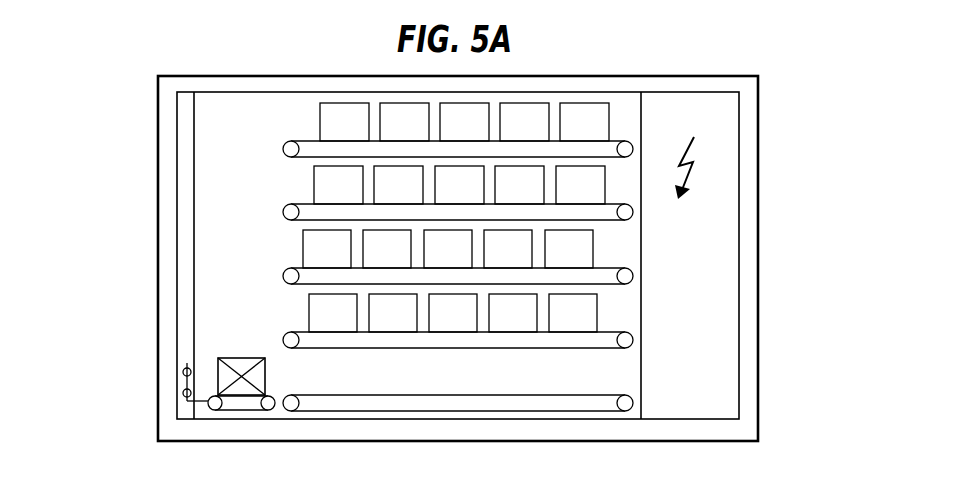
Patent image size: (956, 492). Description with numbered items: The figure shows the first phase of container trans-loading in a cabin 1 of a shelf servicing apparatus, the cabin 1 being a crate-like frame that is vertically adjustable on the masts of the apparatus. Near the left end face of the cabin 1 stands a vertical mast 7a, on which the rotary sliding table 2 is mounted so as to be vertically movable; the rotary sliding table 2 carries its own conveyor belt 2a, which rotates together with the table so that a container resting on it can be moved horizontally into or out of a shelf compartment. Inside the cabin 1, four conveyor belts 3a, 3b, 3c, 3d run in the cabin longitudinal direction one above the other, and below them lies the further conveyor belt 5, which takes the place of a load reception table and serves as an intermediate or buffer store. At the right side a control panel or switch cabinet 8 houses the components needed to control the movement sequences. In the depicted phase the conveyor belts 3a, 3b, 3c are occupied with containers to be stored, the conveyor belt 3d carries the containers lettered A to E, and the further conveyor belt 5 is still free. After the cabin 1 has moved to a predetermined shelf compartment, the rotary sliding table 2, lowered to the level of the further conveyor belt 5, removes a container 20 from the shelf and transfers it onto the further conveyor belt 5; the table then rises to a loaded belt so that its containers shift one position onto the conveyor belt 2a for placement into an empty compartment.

The cabin 1 is at (113, 261).
The vertical mast 7a is at (185, 158).
The conveyor belt 3a is at (610, 146).
The conveyor belt 3b is at (283, 213).
The conveyor belt 3c is at (283, 278).
The conveyor belt 3d is at (633, 338).
The further conveyor belt 5 is at (373, 403).
The control panel or switch cabinet 8 is at (692, 289).
The container to be removed from store 20 is at (218, 358).
The rotary sliding table 2 is at (207, 409).
The conveyor belt 2a is at (212, 410).